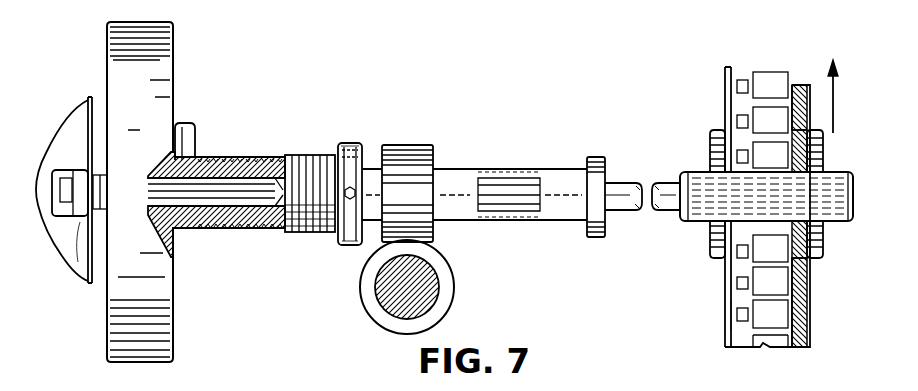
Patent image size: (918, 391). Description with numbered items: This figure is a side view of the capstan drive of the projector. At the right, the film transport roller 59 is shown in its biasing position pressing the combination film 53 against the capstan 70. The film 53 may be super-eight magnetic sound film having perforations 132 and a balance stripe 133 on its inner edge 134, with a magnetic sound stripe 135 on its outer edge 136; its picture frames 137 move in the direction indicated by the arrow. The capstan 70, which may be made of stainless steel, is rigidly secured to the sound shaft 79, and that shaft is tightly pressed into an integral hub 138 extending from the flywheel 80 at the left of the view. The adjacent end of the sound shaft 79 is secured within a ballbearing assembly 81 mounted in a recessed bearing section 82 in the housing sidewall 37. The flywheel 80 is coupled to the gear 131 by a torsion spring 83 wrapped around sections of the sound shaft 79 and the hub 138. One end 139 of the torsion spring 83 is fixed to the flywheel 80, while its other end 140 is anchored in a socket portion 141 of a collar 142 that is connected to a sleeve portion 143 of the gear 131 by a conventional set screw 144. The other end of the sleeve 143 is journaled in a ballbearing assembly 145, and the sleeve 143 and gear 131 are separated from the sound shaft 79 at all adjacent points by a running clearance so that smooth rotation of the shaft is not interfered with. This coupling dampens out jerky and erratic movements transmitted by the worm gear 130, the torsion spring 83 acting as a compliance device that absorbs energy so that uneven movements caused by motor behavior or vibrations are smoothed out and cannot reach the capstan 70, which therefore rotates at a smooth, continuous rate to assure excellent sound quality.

The housing sidewall 37 is at (86, 104).
The recessed bearing section 82 is at (78, 170).
The ballbearing assembly 81 is at (80, 222).
The flywheel 80 is at (165, 96).
The sound shaft 79 is at (214, 190).
The integral hub 138 is at (180, 233).
The one end of torsion spring 139 is at (193, 124).
The torsion spring 83 is at (300, 232).
The other end of torsion spring 140 is at (337, 150).
The socket portion 141 is at (350, 143).
The collar 142 is at (350, 200).
The set screw 144 is at (350, 243).
The sleeve portion 143 is at (460, 175).
The gear 131 is at (408, 145).
The worm gear 130 is at (440, 311).
The ballbearing assembly 145 is at (610, 128).
The capstan 70 is at (853, 173).
The film transport roller 59 is at (825, 238).
The combination film 53 is at (762, 346).
The perforations 132 is at (737, 122).
The picture frames 137 is at (773, 115).
The balance stripe 133 is at (725, 275).
The inner edge 134 is at (723, 317).
The magnetic sound stripe 135 is at (803, 293).
The outer edge 136 is at (809, 327).